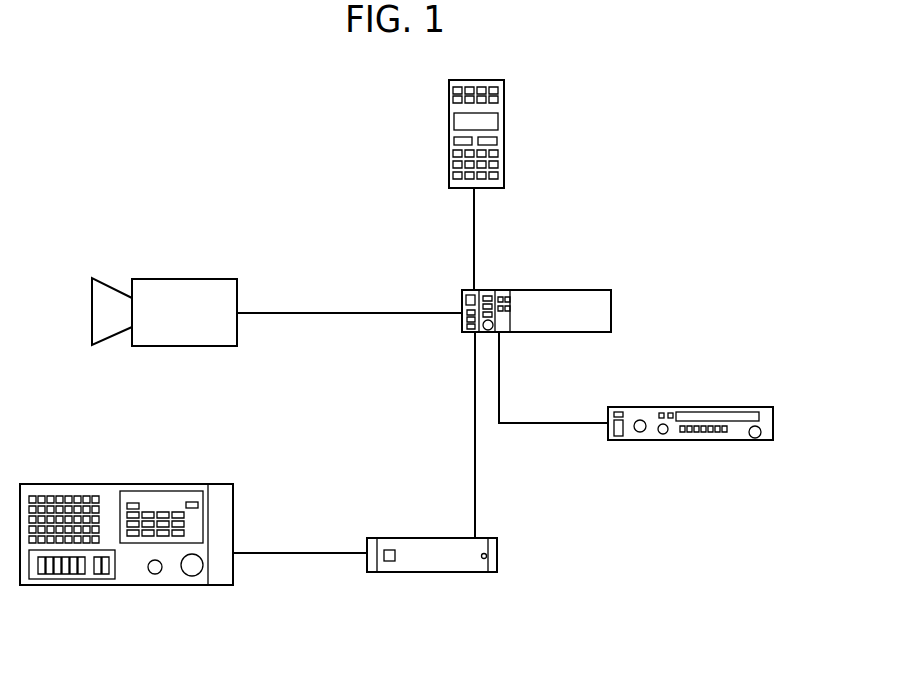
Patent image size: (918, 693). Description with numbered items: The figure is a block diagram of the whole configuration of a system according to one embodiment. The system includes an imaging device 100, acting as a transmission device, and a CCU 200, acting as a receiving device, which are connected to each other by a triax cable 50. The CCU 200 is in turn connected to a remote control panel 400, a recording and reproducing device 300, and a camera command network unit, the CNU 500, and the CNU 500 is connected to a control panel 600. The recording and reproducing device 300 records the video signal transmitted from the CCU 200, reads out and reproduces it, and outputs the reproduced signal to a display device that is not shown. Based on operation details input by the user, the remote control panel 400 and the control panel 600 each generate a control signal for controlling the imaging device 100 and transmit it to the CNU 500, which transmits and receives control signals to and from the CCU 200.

The triax cable 50 is at (310, 312).
The imaging device 100 is at (181, 278).
The CCU 200 is at (557, 288).
The recording and reproducing device 300 is at (683, 406).
The remote control panel 400 is at (505, 129).
The camera command network unit (CNU) 500 is at (419, 537).
The control panel 600 is at (121, 483).